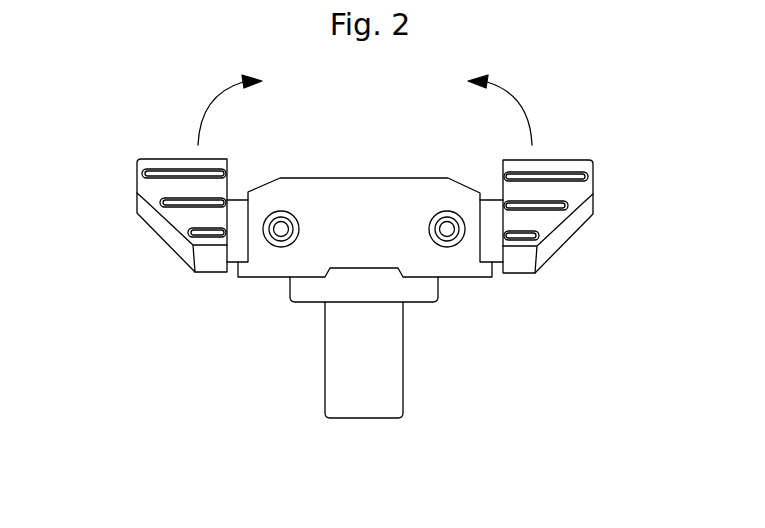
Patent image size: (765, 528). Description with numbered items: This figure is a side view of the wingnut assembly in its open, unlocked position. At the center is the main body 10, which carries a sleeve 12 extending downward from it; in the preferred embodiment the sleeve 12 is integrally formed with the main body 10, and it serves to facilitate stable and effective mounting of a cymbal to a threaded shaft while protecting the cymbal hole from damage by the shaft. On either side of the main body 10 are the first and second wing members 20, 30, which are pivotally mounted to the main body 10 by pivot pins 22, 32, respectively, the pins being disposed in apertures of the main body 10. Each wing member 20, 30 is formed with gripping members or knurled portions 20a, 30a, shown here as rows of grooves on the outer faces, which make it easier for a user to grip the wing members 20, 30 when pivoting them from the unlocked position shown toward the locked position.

The main body 10 is at (366, 190).
The sleeve 12 is at (403, 358).
The first wing member 20 is at (154, 191).
The knurled portions 20a is at (143, 173).
The pivot pin 22 is at (292, 211).
The second wing member 30 is at (575, 191).
The knurled portions 30a is at (588, 176).
The pivot pin 32 is at (437, 211).